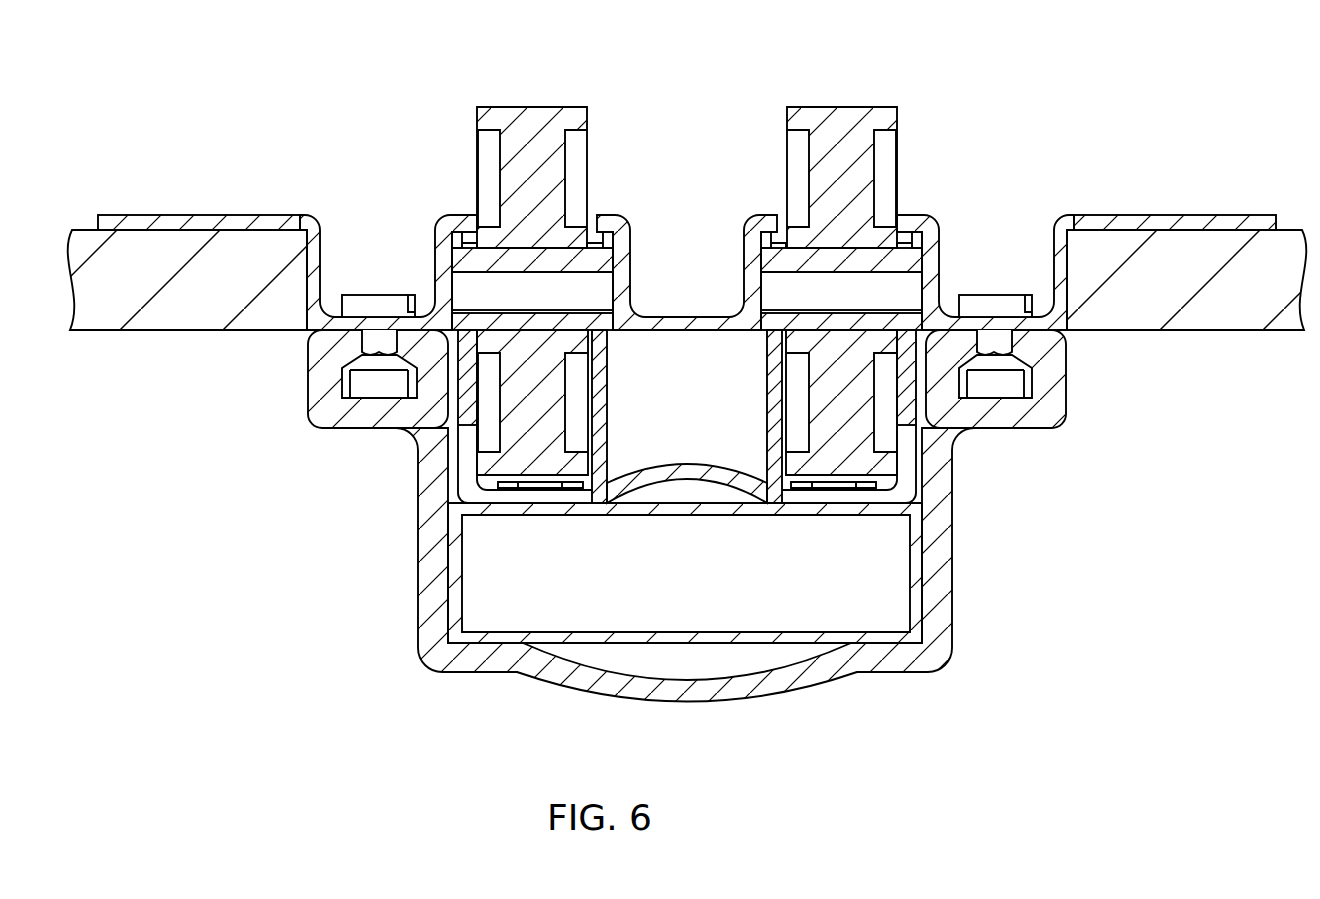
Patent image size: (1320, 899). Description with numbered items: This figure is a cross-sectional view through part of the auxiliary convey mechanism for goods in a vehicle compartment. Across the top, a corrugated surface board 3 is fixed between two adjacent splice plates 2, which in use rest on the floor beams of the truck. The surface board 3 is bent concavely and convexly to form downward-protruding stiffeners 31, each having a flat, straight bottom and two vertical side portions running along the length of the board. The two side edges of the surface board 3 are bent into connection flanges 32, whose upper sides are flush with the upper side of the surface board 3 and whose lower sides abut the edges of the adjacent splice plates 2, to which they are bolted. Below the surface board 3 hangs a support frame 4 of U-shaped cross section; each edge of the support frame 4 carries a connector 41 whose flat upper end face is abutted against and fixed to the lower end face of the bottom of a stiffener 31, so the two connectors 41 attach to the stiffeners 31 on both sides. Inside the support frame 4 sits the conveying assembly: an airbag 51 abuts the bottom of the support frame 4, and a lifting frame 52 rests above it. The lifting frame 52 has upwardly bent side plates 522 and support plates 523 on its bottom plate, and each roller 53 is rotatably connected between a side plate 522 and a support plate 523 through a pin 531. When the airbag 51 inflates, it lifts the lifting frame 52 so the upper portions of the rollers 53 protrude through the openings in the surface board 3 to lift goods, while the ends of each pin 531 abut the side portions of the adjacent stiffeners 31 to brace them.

The splice plate 2 is at (140, 303).
The surface board 3 is at (600, 215).
The stiffener 31 is at (373, 322).
The connection flange 32 is at (205, 222).
The support frame 4 is at (940, 538).
The connector 41 is at (335, 410).
The airbag 51 is at (455, 573).
The lifting frame 52 is at (683, 486).
The side plate 522 is at (467, 390).
The support plate 523 is at (598, 413).
The roller 53 is at (507, 182).
The pin 531 is at (550, 263).